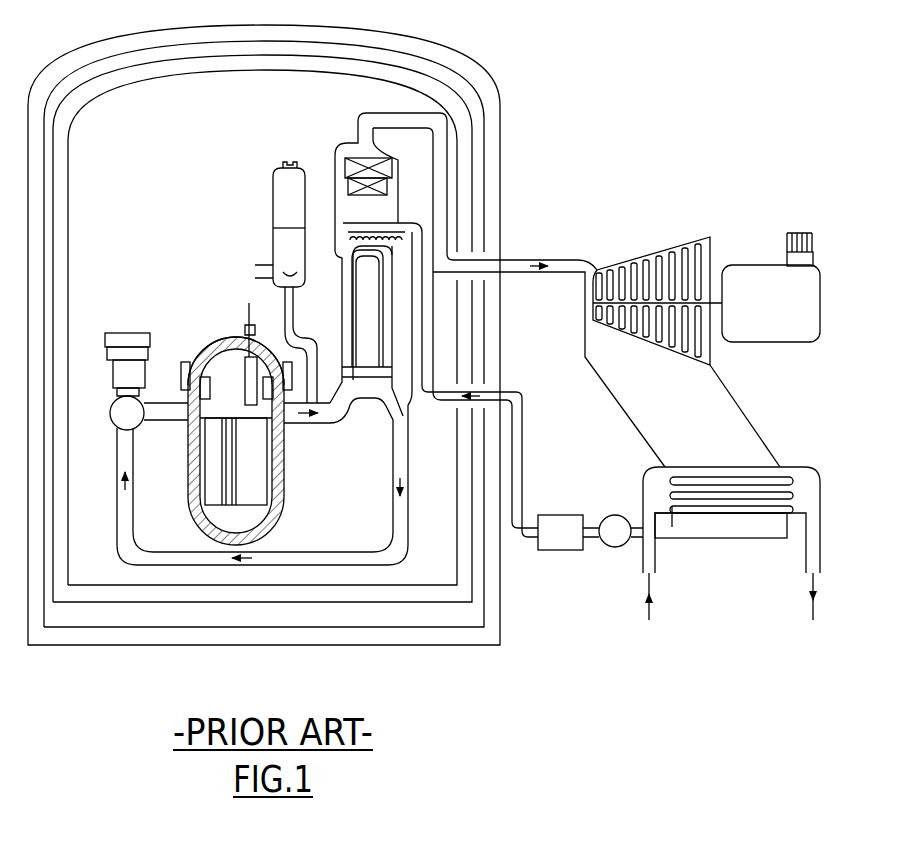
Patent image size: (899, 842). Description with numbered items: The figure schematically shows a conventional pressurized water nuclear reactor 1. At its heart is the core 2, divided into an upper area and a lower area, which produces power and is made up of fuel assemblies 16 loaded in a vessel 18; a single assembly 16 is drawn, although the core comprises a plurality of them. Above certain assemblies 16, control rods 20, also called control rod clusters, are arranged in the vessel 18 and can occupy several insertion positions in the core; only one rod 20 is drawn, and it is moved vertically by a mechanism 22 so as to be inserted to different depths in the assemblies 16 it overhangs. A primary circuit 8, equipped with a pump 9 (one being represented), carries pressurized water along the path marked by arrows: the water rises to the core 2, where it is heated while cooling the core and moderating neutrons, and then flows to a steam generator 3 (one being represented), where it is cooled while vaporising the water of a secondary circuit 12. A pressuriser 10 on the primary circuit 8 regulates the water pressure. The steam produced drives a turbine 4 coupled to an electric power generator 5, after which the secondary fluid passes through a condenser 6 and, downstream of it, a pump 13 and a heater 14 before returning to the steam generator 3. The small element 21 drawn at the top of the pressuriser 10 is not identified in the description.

The pressurized water nuclear reactor 1 is at (522, 92).
The core 2 is at (287, 442).
The steam generator 3 is at (348, 134).
The turbine 4 is at (677, 238).
The electric power generator 5 is at (834, 305).
The condenser 6 is at (766, 415).
The primary circuit 8 is at (112, 502).
The pump 9 is at (96, 330).
The pressuriser 10 is at (268, 207).
The secondary circuit 12 is at (550, 252).
The pump 13 is at (611, 557).
The heater 14 is at (568, 505).
The fuel assembly 16 is at (218, 462).
The vessel 18 is at (291, 508).
The control rod 20 is at (262, 362).
The pressurizer relief valve 21 is at (289, 160).
The mechanism 22 is at (243, 318).